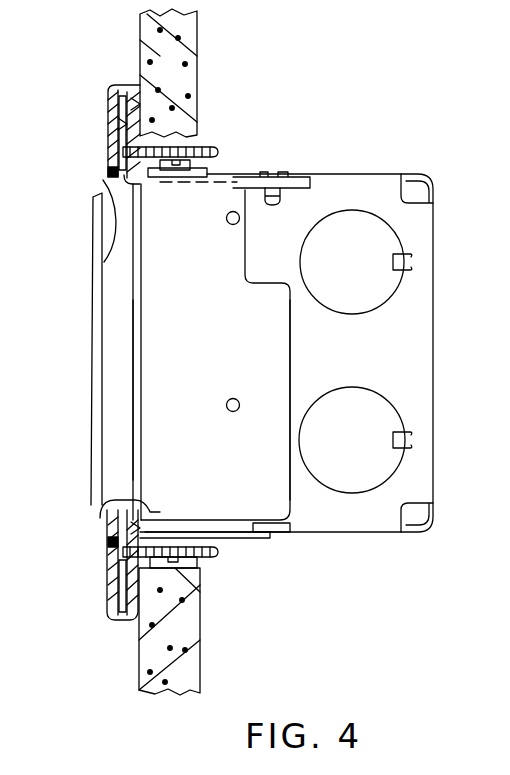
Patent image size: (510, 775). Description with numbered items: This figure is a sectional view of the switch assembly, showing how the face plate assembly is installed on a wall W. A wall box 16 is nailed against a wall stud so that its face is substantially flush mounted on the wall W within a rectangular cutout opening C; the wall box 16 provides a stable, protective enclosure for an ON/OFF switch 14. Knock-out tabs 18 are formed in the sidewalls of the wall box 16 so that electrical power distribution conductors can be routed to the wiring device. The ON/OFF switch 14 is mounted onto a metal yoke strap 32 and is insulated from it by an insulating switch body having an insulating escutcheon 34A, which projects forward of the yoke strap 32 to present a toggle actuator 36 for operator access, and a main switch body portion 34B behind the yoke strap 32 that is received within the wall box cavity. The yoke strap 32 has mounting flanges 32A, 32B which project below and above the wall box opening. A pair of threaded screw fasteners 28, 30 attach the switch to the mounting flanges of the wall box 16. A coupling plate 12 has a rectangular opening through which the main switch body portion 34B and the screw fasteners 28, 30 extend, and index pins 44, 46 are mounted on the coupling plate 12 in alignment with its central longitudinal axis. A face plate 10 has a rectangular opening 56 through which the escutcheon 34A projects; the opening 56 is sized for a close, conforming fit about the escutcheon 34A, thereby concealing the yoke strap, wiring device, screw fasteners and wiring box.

The wall W is at (150, 32).
The face plate 10 is at (105, 95).
The coupling plate 12 is at (144, 102).
The index pin 46 is at (118, 124).
The rectangular cutout opening C is at (207, 146).
The threaded screw fastener 30 is at (217, 147).
The mounting flange 32B is at (108, 172).
The rectangular opening 56 is at (103, 258).
The toggle actuator 36 is at (95, 348).
The insulating escutcheon 34A is at (120, 388).
The main switch body portion 34B is at (222, 359).
The ON/OFF switch 14 is at (295, 372).
The wall box 16 is at (366, 164).
The knock-out tabs 18 is at (347, 285).
The metal yoke strap 32 is at (123, 512).
The mounting flange 32A is at (112, 568).
The index pin 44 is at (108, 600).
The threaded screw fastener 28 is at (219, 552).